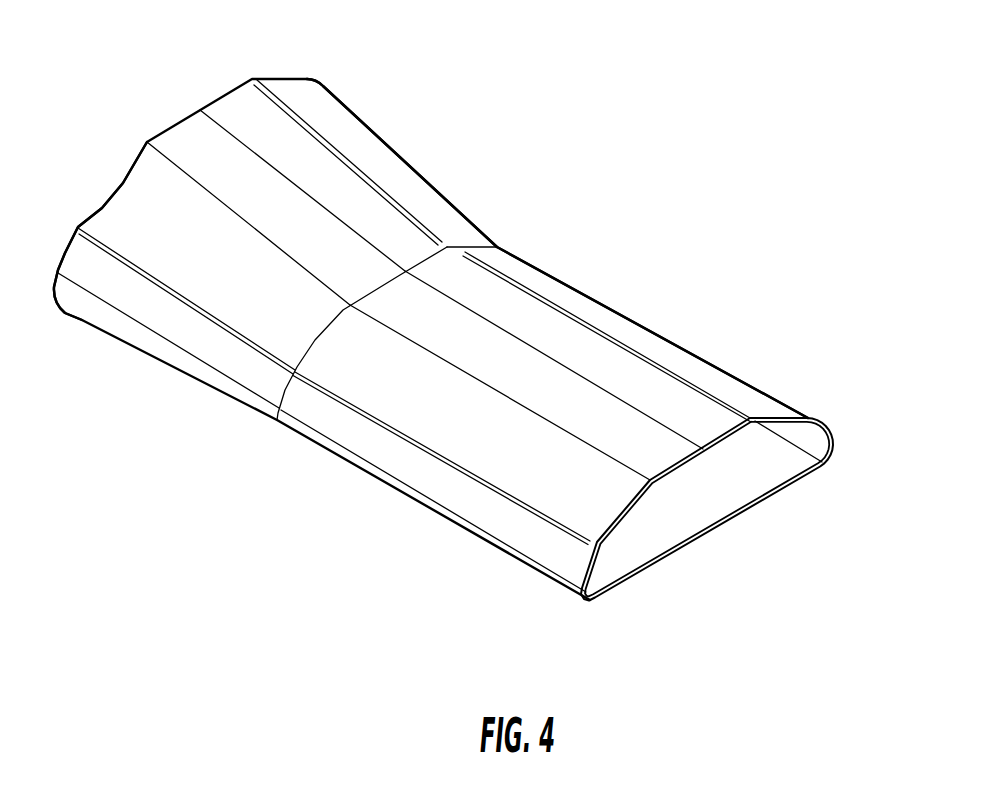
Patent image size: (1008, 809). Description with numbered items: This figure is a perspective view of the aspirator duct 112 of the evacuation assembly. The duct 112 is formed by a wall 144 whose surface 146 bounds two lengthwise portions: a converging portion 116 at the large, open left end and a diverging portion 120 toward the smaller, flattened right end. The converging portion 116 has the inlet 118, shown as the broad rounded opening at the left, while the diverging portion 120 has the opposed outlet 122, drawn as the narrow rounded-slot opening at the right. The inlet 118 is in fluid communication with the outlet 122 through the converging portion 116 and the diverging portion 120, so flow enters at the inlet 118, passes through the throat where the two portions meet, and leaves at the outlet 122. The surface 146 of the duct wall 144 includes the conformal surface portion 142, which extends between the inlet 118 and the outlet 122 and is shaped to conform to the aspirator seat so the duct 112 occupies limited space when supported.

The duct 112 is at (462, 358).
The converging portion 116 is at (382, 160).
The inlet 118 is at (160, 95).
The diverging portion 120 is at (613, 330).
The outlet 122 is at (725, 547).
The conformal surface portion 142 is at (715, 498).
The wall 144 is at (623, 512).
The surface 146 is at (374, 368).